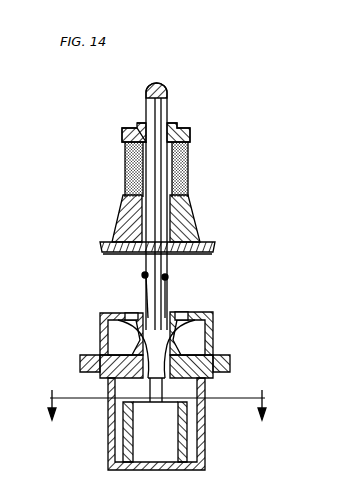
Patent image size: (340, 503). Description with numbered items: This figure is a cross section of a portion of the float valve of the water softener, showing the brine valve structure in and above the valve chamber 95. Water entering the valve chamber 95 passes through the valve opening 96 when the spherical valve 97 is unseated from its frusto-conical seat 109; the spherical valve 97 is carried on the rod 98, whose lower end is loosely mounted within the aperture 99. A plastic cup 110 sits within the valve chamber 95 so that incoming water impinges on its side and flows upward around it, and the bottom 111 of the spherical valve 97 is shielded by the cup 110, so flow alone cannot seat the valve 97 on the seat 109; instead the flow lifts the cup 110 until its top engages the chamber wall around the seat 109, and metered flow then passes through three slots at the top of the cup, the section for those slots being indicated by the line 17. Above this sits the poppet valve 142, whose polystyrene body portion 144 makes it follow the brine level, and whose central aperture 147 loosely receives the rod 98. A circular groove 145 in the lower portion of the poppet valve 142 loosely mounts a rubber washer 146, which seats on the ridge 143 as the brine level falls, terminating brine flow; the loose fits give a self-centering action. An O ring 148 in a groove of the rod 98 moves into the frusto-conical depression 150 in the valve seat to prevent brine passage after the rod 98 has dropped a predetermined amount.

The rod 98 is at (168, 106).
The polystyrene body portion 144 is at (190, 150).
The central aperture 147 is at (133, 160).
The poppet valve 142 is at (200, 205).
The circular groove 145 is at (112, 260).
The rubber washer 146 is at (210, 243).
The O ring 148 is at (168, 277).
The aperture 99 is at (150, 318).
The valve opening 96 is at (115, 330).
The ridge 143 is at (185, 310).
The frusto-conical depression 150 is at (178, 302).
The spherical valve 97 is at (100, 380).
The frusto-conical seat 109 is at (222, 372).
The valve chamber 95 is at (200, 452).
The cup 110 is at (128, 440).
The bottom of valve 111 is at (164, 437).
The section line 17 is at (156, 420).